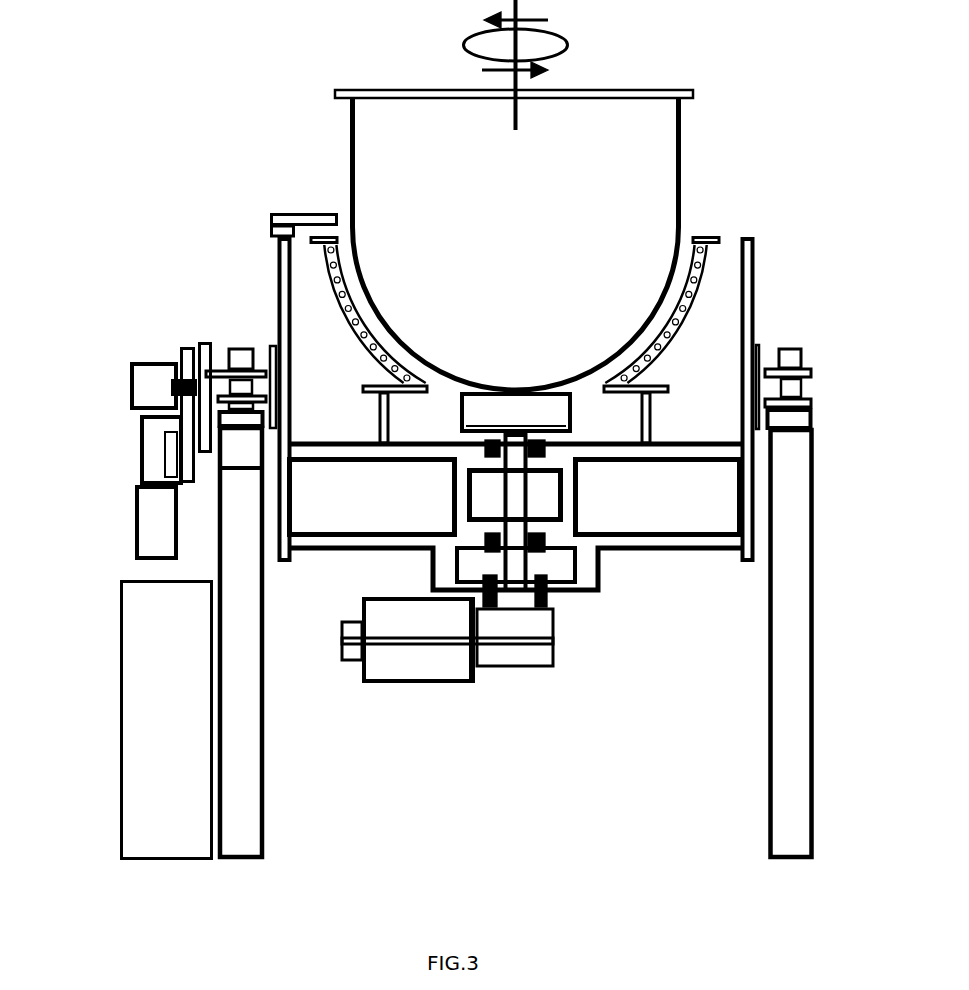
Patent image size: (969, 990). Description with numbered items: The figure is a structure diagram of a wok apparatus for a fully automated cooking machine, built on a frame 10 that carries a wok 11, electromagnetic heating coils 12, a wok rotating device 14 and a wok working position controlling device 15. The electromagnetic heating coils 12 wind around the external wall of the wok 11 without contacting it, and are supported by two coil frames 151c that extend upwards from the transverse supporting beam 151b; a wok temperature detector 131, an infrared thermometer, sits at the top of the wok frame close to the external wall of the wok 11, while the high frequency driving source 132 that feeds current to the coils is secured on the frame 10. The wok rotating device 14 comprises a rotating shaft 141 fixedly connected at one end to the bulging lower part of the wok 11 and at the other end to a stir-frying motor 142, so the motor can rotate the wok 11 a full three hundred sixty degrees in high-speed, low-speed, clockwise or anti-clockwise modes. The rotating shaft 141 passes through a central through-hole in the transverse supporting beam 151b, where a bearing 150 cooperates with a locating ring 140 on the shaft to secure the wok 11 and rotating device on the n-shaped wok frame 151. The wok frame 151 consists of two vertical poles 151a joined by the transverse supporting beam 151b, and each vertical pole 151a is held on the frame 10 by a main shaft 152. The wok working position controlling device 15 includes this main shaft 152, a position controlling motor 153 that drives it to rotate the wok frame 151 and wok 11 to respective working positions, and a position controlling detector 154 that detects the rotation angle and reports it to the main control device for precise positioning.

The frame 10 is at (788, 642).
The wok 11 is at (643, 178).
The electromagnetic heating coils 12 is at (690, 277).
The wok rotating device 14 is at (447, 621).
The wok working position controlling device 15 is at (446, 439).
The wok temperature detector 131 is at (290, 225).
The high frequency driving source 132 is at (170, 680).
The locating ring 140 is at (537, 458).
The rotating shaft 141 is at (517, 537).
The stir-frying motor 142 is at (505, 755).
The bearing 150 is at (487, 448).
The wok frame 151 is at (290, 537).
The vertical poles 151a is at (744, 328).
The transverse supporting beam 151b is at (647, 548).
The coil frames 151c is at (642, 420).
The main shaft 152 is at (218, 375).
The position controlling motor 153 is at (158, 452).
The position controlling detector 154 is at (158, 385).